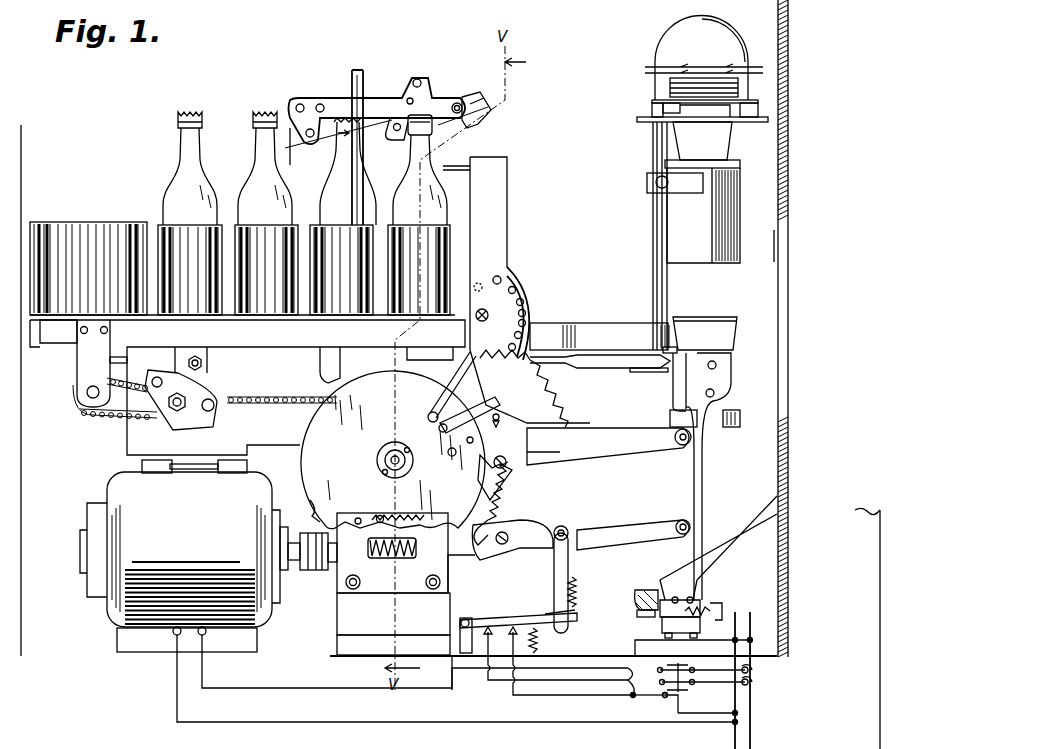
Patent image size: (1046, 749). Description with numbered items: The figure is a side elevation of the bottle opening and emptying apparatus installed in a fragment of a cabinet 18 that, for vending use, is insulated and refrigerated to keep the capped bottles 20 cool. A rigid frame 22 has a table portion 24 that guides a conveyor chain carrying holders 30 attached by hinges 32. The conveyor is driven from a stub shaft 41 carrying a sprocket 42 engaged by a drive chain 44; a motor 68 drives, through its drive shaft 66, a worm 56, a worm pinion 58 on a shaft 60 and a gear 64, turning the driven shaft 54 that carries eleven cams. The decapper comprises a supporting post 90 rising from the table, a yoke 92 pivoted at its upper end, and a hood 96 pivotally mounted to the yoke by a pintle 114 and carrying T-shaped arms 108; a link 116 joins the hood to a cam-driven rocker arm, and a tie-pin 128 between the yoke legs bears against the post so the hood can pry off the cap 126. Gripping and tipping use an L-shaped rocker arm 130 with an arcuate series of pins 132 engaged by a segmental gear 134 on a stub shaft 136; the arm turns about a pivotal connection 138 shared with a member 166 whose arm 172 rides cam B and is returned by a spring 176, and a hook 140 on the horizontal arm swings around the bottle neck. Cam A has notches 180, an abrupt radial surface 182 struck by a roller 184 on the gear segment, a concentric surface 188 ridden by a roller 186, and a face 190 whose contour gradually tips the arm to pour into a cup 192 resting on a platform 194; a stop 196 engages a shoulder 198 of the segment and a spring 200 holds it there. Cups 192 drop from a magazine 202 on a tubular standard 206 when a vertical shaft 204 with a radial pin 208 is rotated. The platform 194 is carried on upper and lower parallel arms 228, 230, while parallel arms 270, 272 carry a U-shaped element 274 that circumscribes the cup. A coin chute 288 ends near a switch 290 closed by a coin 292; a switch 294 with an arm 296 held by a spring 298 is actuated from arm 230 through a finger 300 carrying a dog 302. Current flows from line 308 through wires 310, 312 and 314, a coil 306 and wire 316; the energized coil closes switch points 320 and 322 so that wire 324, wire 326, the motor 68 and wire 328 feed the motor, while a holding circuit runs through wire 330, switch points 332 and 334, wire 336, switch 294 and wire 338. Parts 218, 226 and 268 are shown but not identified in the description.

The cabinet 18 is at (775, 575).
The capped bottle 20 is at (195, 160).
The frame 22 is at (455, 589).
The table portion 24 is at (247, 396).
The holder 30 is at (105, 232).
The hinge 32 is at (180, 321).
The stub shaft 41 is at (85, 397).
The sprocket 42 is at (112, 418).
The drive chain 44 is at (138, 420).
The driven shaft 54 is at (385, 464).
The worm 56 is at (374, 592).
The worm pinion 58 is at (380, 516).
The shaft 60 is at (358, 525).
The gear 64 is at (404, 516).
The drive shaft 66 is at (324, 572).
The motor 68 is at (180, 562).
The supporting post 90 is at (295, 182).
The yoke 92 is at (336, 97).
The hood 96 is at (493, 106).
The T-shaped arm 108 is at (430, 110).
The pintle 114 is at (460, 102).
The link 116 is at (348, 162).
The cap 126 is at (195, 110).
The tie-pin 128 is at (310, 138).
The L-shaped rocker arm 130 is at (497, 198).
The pin 132 is at (527, 312).
The segmental gear 134 is at (530, 389).
The stub shaft 136 is at (504, 416).
The pivotal connection 138 is at (484, 321).
The hook 140 is at (462, 168).
The member 166 is at (524, 295).
The arm 172 is at (455, 387).
The spring 176 is at (526, 335).
The notch 180 is at (308, 505).
The radial surface 182 is at (433, 425).
The roller 184 is at (450, 423).
The roller 186 is at (458, 452).
The concentric surface 188 is at (478, 525).
The face 190 is at (297, 437).
The cup 192 is at (710, 345).
The platform 194 is at (728, 420).
The stop 196 is at (480, 468).
The shoulder 198 is at (503, 485).
The spring 200 is at (505, 505).
The magazine 202 is at (666, 82).
The vertical shaft 204 is at (650, 372).
The tubular standard 206 is at (650, 240).
The pin 208 is at (657, 130).
The blade 218 is at (600, 369).
The stop 226 is at (665, 350).
The upper parallel arm 228 is at (600, 433).
The lower parallel arm 230 is at (590, 525).
The frame member 268 is at (772, 262).
The parallel arm 270 is at (615, 450).
The parallel arm 272 is at (635, 525).
The U-shaped element 274 is at (698, 465).
The coin chute 288 is at (672, 572).
The switch 290 is at (660, 628).
The coin 292 is at (640, 593).
The switch 294 is at (518, 625).
The arm 296 is at (548, 610).
The spring 298 is at (540, 645).
The finger 300 is at (568, 562).
The dog 302 is at (574, 600).
The coil 306 is at (673, 711).
The line 308 is at (752, 726).
The wire 310 is at (700, 645).
The wire 312 is at (645, 643).
The wire 314 is at (633, 700).
The wire 316 is at (697, 716).
The switch point 320 is at (660, 672).
The switch point 322 is at (690, 670).
The wire 324 is at (750, 670).
The wire 326 is at (562, 670).
The wire 328 is at (462, 720).
The wire 330 is at (750, 685).
The switch point 332 is at (690, 682).
The switch point 334 is at (664, 686).
The wire 336 is at (552, 690).
The wire 338 is at (500, 698).